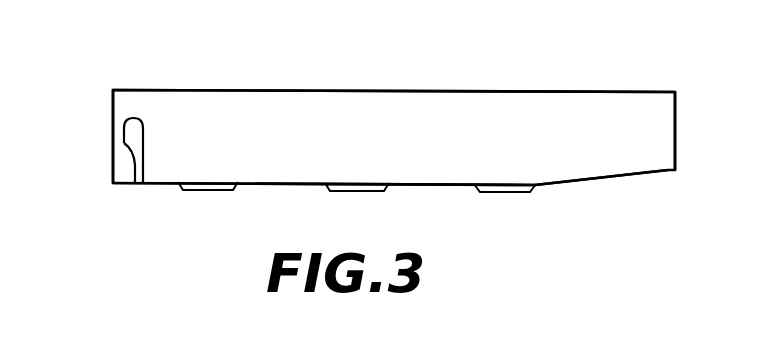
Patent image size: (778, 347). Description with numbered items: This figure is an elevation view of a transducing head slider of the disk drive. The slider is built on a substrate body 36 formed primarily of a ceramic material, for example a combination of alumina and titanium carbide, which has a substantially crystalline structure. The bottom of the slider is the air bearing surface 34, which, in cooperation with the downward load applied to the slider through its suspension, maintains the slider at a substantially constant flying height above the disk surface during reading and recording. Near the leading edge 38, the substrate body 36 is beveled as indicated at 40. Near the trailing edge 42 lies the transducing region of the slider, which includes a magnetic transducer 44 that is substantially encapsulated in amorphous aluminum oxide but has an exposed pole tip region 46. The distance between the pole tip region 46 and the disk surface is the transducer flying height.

The air bearing surface 34 is at (170, 57).
The substrate body 36 is at (369, 118).
The leading edge 38 is at (677, 131).
The bevel 40 is at (641, 174).
The trailing edge 42 is at (112, 131).
The magnetic transducer 44 is at (131, 155).
The pole tip region 46 is at (141, 184).